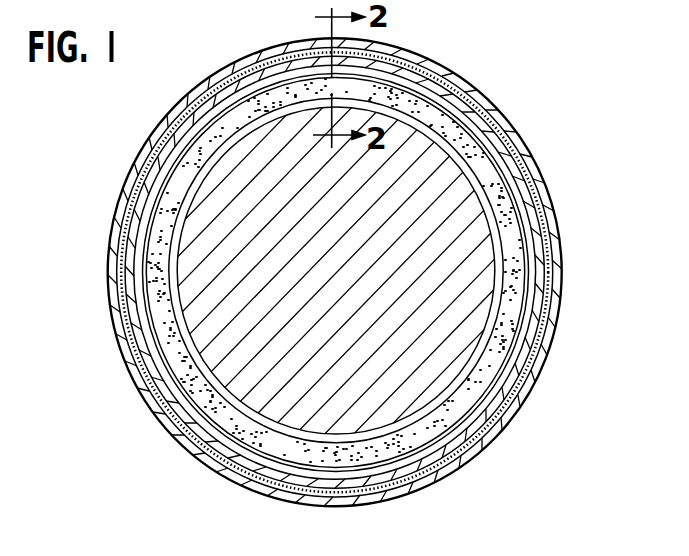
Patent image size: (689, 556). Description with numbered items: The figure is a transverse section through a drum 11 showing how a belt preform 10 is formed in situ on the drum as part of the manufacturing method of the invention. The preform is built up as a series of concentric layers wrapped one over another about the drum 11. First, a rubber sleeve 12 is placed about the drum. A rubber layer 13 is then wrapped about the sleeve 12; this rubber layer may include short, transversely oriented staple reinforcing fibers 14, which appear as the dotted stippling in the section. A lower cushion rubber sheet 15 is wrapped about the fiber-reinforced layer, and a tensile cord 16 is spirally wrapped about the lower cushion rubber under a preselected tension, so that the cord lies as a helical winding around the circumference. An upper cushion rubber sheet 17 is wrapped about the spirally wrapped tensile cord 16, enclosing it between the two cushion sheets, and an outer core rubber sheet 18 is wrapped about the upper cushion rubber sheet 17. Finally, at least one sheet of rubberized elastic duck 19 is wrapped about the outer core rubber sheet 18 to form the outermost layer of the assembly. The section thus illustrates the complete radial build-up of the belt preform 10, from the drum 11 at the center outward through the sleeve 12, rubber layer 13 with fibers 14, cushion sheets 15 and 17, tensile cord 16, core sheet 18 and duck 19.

The belt preform 10 is at (523, 138).
The drum 11 is at (435, 168).
The rubber sleeve 12 is at (487, 213).
The rubber layer 13 is at (510, 288).
The staple reinforcing fibers 14 is at (497, 362).
The lower cushion rubber sheet 15 is at (527, 258).
The tensile cord 16 is at (495, 408).
The upper cushion rubber sheet 17 is at (478, 445).
The outer core rubber sheet 18 is at (552, 317).
The rubberized elastic duck 19 is at (433, 482).